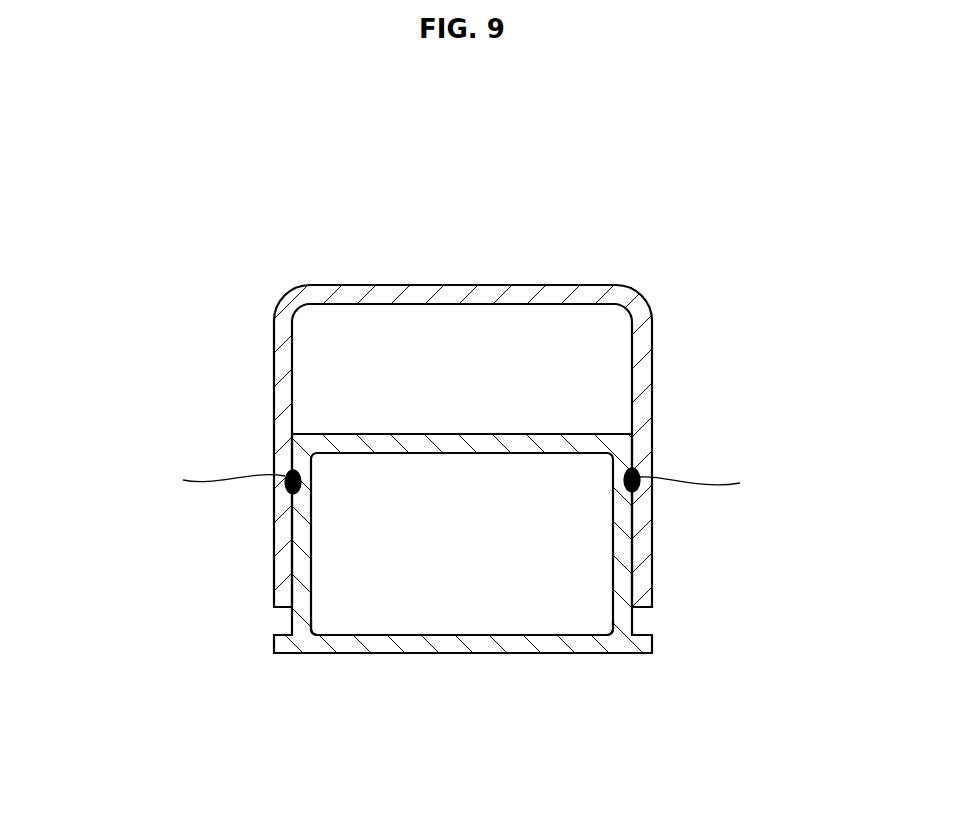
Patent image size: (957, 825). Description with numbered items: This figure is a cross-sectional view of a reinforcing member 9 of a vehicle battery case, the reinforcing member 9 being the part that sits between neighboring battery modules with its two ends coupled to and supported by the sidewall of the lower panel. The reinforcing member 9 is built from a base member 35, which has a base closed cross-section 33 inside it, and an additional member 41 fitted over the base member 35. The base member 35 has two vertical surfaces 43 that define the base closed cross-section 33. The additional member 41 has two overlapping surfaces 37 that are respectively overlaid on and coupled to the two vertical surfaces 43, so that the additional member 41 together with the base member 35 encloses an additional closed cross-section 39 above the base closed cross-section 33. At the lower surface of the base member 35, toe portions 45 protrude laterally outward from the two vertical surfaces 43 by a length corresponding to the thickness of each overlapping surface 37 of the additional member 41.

The reinforcing member 9 is at (667, 302).
The base closed cross-section 33 is at (463, 553).
The base member 35 is at (407, 645).
The overlapping surfaces 37 is at (287, 545).
The additional closed cross-section 39 is at (524, 354).
The additional member 41 is at (380, 292).
The vertical surfaces 43 is at (312, 575).
The toe portions 45 is at (285, 645).